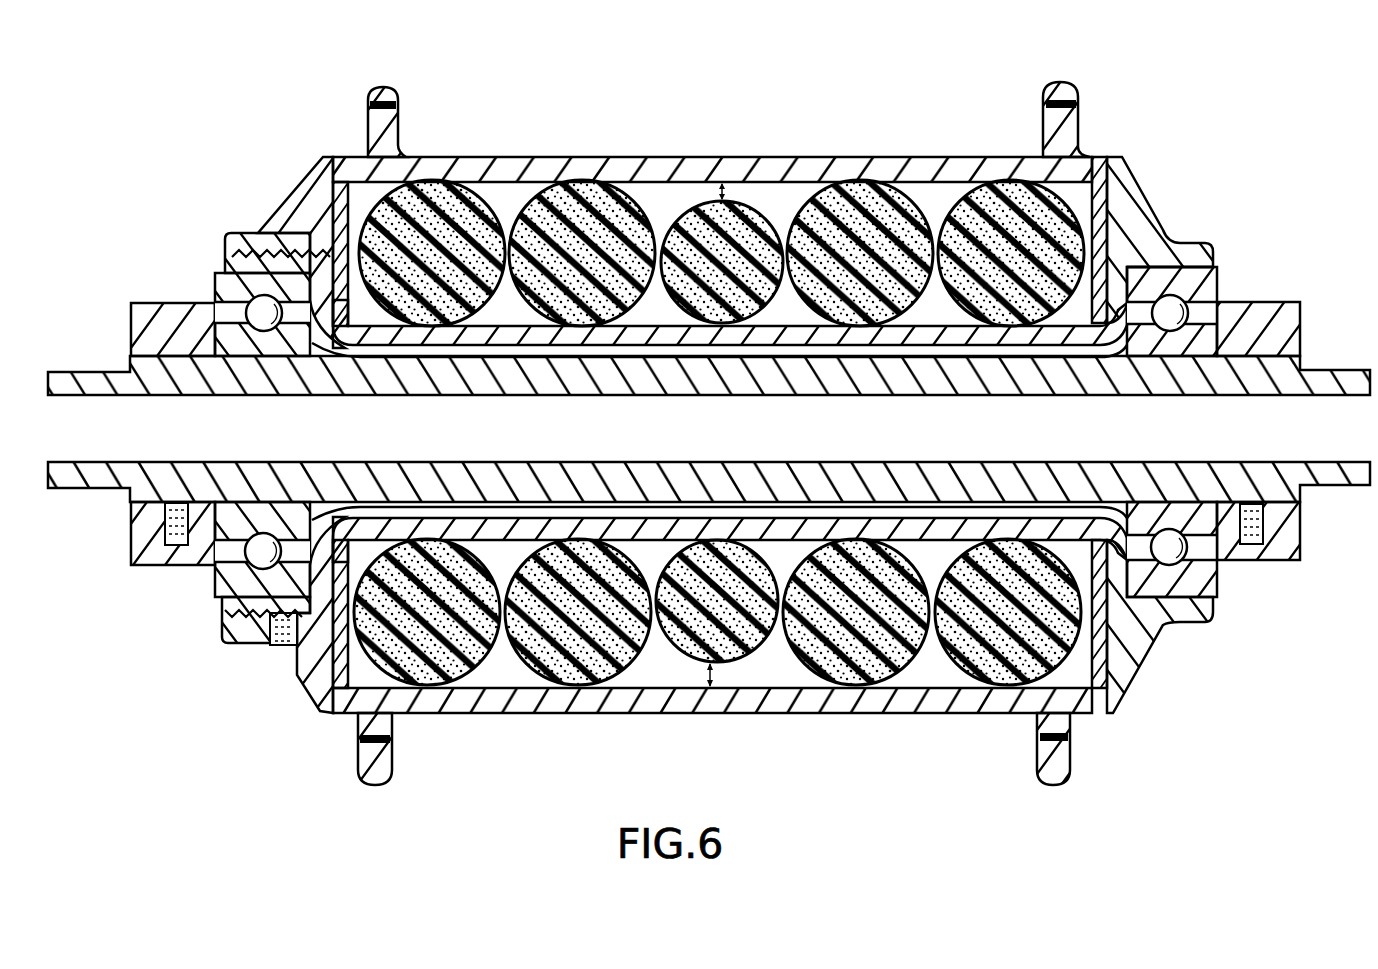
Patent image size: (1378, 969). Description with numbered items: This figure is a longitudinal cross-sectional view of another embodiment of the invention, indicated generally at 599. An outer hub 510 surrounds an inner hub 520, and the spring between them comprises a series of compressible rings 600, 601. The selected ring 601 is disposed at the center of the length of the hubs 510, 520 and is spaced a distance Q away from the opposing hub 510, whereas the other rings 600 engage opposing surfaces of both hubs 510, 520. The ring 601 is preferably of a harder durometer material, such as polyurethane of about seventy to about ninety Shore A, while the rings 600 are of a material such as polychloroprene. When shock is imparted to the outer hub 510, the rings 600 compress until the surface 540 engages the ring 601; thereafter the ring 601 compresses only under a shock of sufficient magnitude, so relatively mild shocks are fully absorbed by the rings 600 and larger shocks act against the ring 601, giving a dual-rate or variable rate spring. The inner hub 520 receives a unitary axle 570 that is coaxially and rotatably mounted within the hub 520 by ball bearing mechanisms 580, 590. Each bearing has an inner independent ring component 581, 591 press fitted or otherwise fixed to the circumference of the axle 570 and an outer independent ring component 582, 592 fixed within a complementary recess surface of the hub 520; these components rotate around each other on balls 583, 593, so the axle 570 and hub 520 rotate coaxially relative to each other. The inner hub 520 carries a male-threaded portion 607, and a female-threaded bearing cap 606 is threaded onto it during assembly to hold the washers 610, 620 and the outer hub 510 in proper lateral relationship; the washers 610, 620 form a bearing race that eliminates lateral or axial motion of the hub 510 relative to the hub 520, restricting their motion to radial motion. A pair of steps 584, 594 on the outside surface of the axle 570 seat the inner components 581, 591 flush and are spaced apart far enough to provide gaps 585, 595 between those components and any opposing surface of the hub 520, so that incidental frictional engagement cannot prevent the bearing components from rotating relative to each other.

The bearing assembly 599 is at (494, 87).
The outer hub 510 is at (548, 170).
The inner hub 520 is at (787, 340).
The surface 540 is at (797, 183).
The axle 570 is at (868, 470).
The ball bearing mechanism 580 is at (1235, 283).
The inner independent ring component 581 is at (1165, 350).
The outer independent ring component 582 is at (1177, 280).
The balls 583 is at (1178, 302).
The step 584 is at (1135, 500).
The gap 585 is at (1168, 235).
The ball bearing mechanism 590 is at (194, 269).
The inner independent ring component 591 is at (250, 347).
The outer independent ring component 592 is at (246, 280).
The balls 593 is at (255, 318).
The step 594 is at (300, 505).
The gap 595 is at (324, 380).
The compressible rings 600 is at (967, 217).
The selected ring 601 is at (683, 212).
The bearing cap 606 is at (313, 195).
The male-threaded portion 607 is at (228, 262).
The washer 610 is at (360, 157).
The washer 620 is at (1093, 160).
The distance Q is at (735, 186).